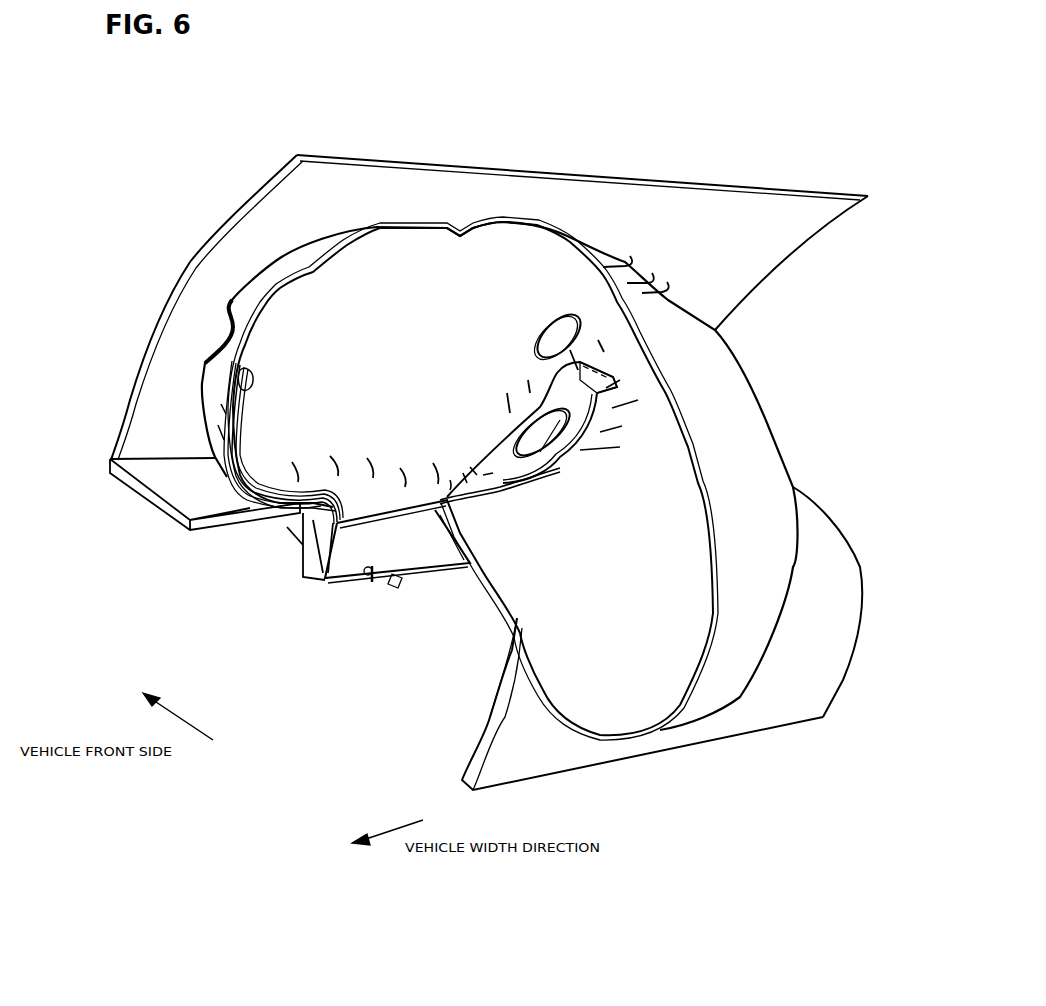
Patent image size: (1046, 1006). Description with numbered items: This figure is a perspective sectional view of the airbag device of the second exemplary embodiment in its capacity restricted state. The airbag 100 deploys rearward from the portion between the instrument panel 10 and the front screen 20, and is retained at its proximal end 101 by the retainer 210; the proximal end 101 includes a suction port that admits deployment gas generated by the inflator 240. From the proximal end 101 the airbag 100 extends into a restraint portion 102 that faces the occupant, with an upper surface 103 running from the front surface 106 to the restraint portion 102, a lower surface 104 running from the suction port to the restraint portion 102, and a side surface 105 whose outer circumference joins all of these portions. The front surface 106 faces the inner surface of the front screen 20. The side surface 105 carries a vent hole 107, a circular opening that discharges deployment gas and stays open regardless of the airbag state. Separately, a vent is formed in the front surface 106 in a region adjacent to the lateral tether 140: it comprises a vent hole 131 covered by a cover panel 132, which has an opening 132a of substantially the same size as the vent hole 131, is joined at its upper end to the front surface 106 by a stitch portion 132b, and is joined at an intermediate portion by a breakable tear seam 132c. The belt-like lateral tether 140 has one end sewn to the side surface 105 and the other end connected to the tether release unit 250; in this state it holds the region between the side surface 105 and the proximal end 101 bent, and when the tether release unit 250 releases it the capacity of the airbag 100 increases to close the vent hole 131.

The instrument panel 10 is at (538, 758).
The front screen 20 is at (240, 207).
The airbag 100 is at (748, 350).
The proximal end 101 is at (327, 507).
The restraint portion 102 is at (755, 568).
The upper surface 103 is at (752, 428).
The lower surface 104 is at (547, 610).
The side surface 105 is at (669, 546).
The front surface 106 is at (465, 422).
The vent hole 107 is at (222, 330).
The vent hole 131 is at (222, 430).
The cover panel 132 is at (243, 405).
The opening 132a is at (240, 447).
The stitch portion 132b is at (233, 370).
The tear seam 132c is at (222, 410).
The lateral tether 140 is at (250, 495).
The retainer 210 is at (418, 550).
The inflator 240 is at (372, 575).
The tether release unit 250 is at (355, 574).